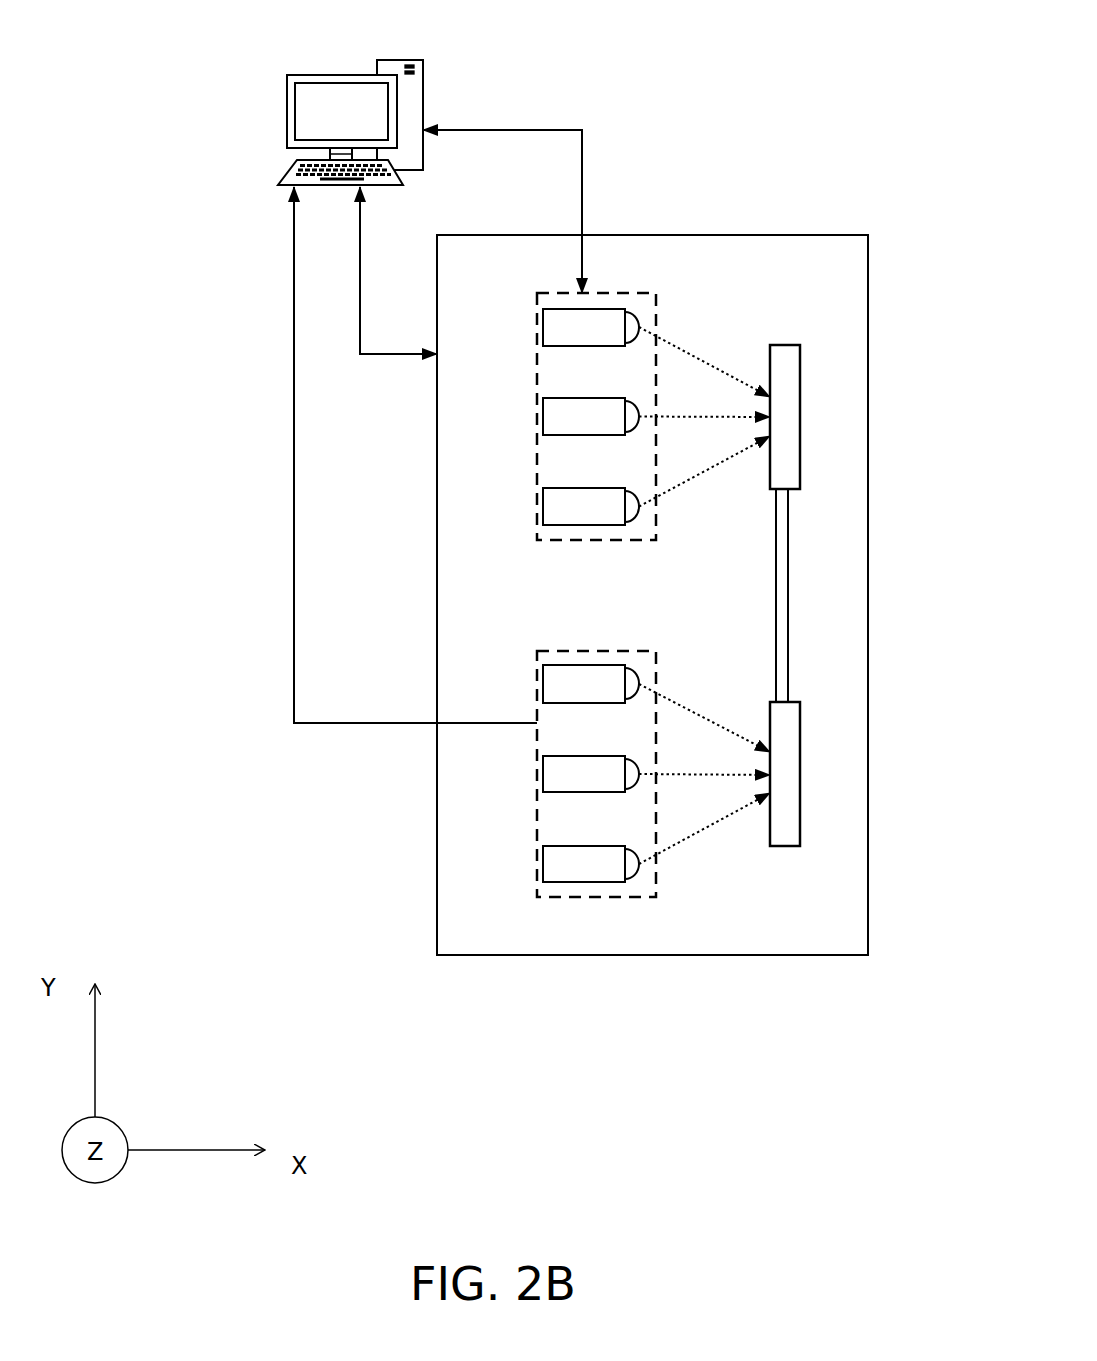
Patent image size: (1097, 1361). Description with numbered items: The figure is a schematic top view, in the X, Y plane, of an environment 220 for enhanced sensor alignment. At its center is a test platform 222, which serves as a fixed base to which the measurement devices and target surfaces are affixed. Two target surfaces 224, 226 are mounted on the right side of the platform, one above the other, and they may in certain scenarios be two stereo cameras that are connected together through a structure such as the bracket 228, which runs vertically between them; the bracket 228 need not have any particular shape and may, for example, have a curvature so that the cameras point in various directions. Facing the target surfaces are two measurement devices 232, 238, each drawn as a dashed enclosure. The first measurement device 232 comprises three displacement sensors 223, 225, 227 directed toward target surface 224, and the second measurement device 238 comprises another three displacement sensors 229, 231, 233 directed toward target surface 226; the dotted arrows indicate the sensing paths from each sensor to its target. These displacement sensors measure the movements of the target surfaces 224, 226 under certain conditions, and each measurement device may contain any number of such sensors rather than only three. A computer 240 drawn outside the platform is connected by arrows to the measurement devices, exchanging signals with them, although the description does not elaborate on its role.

The environment 220 is at (880, 42).
The test platform 222 is at (807, 236).
The displacement sensor 223 is at (543, 323).
The target surface 224 is at (800, 400).
The displacement sensor 225 is at (543, 413).
The target surface 226 is at (800, 757).
The displacement sensor 227 is at (543, 503).
The bracket 228 is at (794, 580).
The displacement sensor 229 is at (543, 684).
The displacement sensor 231 is at (543, 771).
The measurement device 232 is at (637, 294).
The displacement sensor 233 is at (543, 862).
The measurement device 238 is at (655, 652).
The computer 240 is at (287, 108).